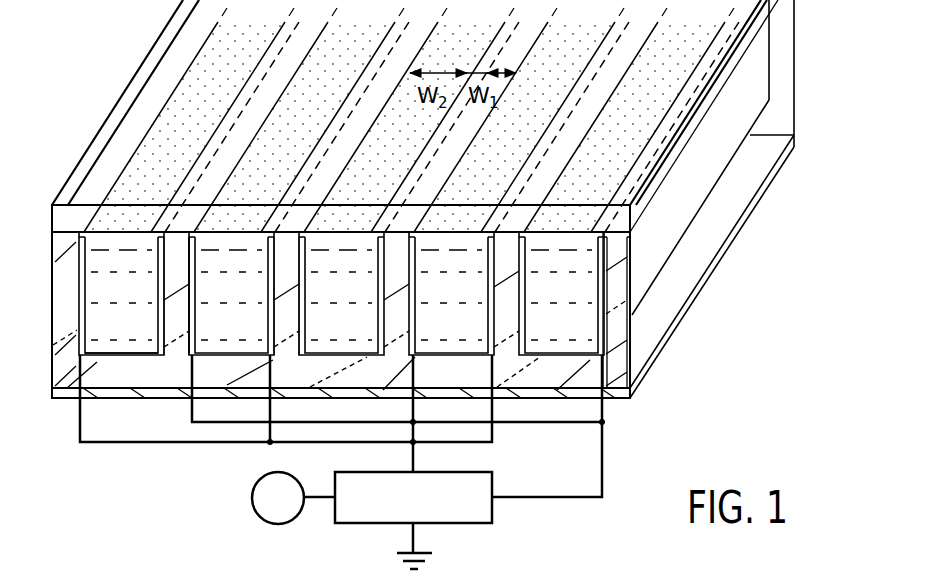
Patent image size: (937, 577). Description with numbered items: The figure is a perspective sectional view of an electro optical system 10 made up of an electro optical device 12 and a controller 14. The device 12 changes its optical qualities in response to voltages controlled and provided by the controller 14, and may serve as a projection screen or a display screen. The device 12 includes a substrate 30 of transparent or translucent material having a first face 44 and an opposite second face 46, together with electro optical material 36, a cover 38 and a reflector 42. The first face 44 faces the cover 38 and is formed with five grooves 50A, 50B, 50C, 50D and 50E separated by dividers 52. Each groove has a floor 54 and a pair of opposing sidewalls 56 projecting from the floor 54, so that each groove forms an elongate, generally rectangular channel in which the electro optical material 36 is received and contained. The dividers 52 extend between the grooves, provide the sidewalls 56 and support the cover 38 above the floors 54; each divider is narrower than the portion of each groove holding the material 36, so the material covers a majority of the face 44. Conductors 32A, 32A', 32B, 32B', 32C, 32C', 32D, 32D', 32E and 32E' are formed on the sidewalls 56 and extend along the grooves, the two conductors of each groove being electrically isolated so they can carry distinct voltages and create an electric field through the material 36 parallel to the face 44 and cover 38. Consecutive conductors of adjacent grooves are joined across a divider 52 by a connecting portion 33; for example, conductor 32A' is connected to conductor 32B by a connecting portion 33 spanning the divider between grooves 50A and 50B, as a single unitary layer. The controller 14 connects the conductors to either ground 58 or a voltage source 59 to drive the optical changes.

The electro optical system 10 is at (690, 367).
The electro optical device 12 is at (640, 288).
The controller 14 is at (493, 514).
The substrate 30 is at (53, 324).
The conductor 32A is at (167, 120).
The conductor 32A' is at (223, 127).
The conductor 32B is at (288, 120).
The conductor 32B' is at (326, 127).
The conductor 32C is at (399, 120).
The conductor 32C' is at (442, 127).
The conductor 32D is at (509, 120).
The conductor 32D' is at (551, 127).
The conductor 32E is at (623, 120).
The conductor 32E' is at (662, 127).
The connecting portion 33 is at (190, 288).
The electro optical material 36 is at (100, 297).
The cover 38 is at (54, 211).
The reflector 42 is at (52, 392).
The first face 44 is at (624, 224).
The second face 46 is at (622, 400).
The groove 50A is at (128, 260).
The groove 50B is at (208, 258).
The groove 50C is at (342, 260).
The groove 50D is at (448, 262).
The groove 50E is at (562, 260).
The divider 52 is at (80, 212).
The floor 54 is at (140, 356).
The sidewall 56 is at (78, 282).
The ground 58 is at (397, 551).
The voltage source 59 is at (259, 514).